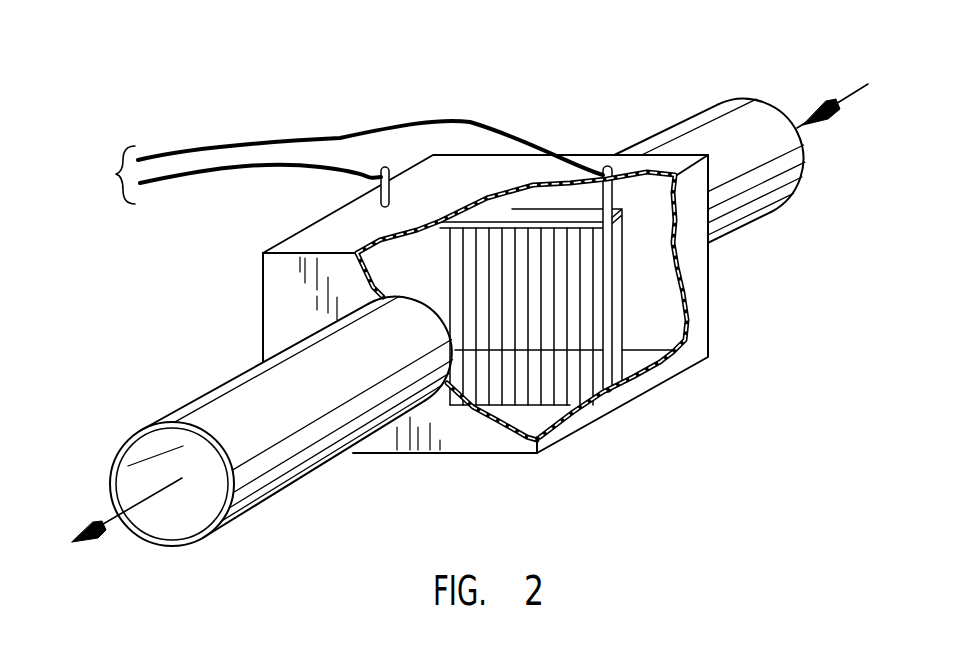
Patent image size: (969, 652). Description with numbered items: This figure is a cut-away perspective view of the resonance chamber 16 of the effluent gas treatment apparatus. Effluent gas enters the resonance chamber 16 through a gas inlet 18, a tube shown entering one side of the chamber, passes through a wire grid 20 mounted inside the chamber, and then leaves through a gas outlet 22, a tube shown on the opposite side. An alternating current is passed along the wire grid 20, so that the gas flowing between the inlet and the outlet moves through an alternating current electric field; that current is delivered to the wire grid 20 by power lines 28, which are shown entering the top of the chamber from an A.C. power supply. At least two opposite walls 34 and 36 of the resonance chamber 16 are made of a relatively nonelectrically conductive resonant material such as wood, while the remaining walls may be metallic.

The resonance chamber 16 is at (467, 173).
The gas inlet 18 is at (755, 140).
The wire grid 20 is at (583, 334).
The gas outlet 22 is at (267, 460).
The power lines 28 is at (322, 138).
The wall of resonance chamber 34 is at (262, 297).
The wall of resonance chamber 36 is at (693, 343).